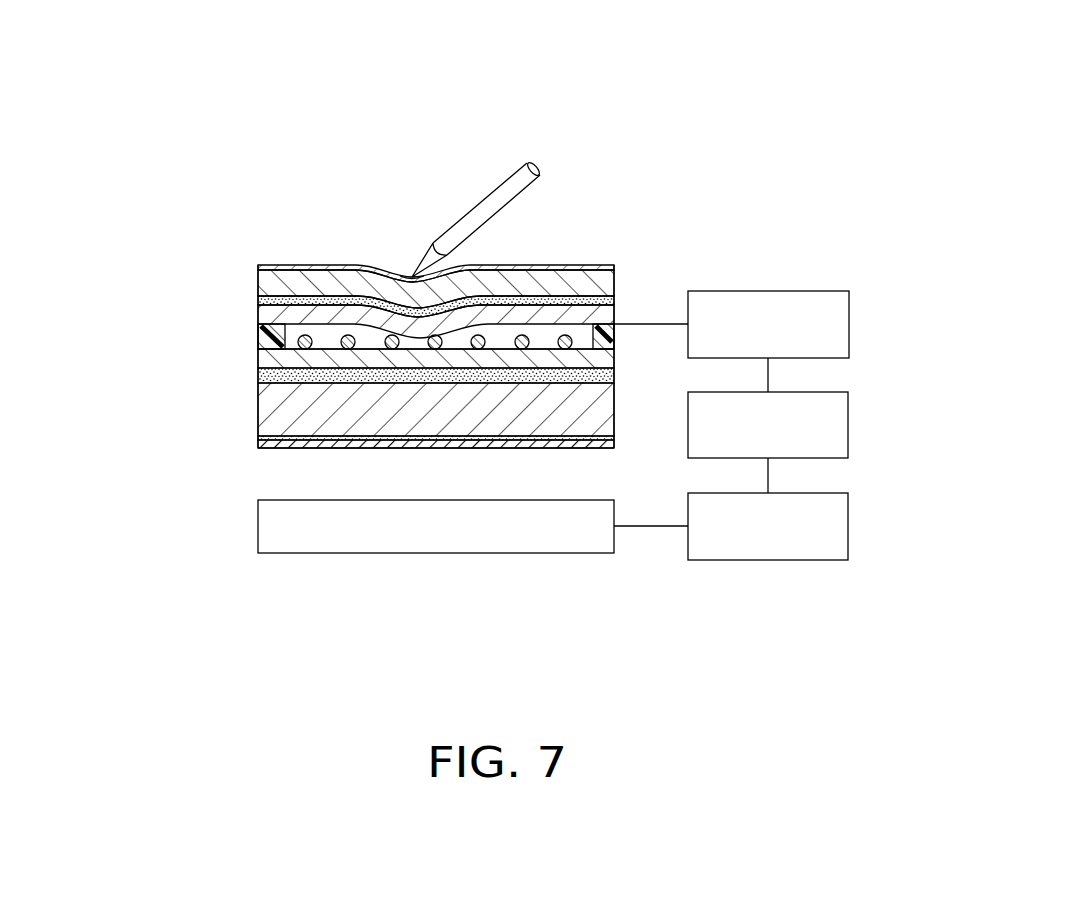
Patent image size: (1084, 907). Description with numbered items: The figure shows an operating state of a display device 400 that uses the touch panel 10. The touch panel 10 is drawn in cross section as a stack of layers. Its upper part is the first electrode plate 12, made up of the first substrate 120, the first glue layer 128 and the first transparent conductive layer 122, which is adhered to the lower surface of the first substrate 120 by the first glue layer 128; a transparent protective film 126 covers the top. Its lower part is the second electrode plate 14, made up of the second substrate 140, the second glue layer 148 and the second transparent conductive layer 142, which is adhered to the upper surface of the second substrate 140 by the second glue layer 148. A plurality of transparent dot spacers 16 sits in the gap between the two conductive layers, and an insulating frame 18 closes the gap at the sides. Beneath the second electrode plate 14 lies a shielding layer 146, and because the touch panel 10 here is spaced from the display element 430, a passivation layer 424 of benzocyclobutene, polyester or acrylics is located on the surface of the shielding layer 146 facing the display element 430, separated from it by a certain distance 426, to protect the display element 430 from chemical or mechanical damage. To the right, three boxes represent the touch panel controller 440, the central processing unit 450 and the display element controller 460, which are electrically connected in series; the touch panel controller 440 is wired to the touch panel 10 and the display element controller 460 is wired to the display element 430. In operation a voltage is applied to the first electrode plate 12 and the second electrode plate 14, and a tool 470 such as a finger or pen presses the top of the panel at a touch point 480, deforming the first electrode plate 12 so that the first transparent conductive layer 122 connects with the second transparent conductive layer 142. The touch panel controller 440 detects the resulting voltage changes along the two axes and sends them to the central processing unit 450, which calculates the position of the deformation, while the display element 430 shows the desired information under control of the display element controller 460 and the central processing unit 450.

The display device 400 is at (505, 40).
The touch panel 10 is at (134, 230).
The first electrode plate 12 is at (177, 258).
The second electrode plate 14 is at (177, 335).
The transparent dot spacers 16 is at (566, 335).
The insulating frame 18 is at (615, 337).
The first substrate 120 is at (260, 283).
The first transparent conductive layer 122 is at (260, 311).
The transparent protective film 126 is at (261, 268).
The first glue layer 128 is at (260, 300).
The second substrate 140 is at (260, 378).
The second transparent conductive layer 142 is at (260, 347).
The shielding layer 146 is at (262, 437).
The second glue layer 148 is at (260, 360).
The passivation layer 424 is at (272, 447).
The distance 426 is at (272, 478).
The display element 430 is at (270, 535).
The touch panel controller 440 is at (762, 291).
The central processing unit 450 is at (817, 392).
The display element controller 460 is at (816, 493).
The tool 470 is at (472, 222).
The touch point 480 is at (410, 275).